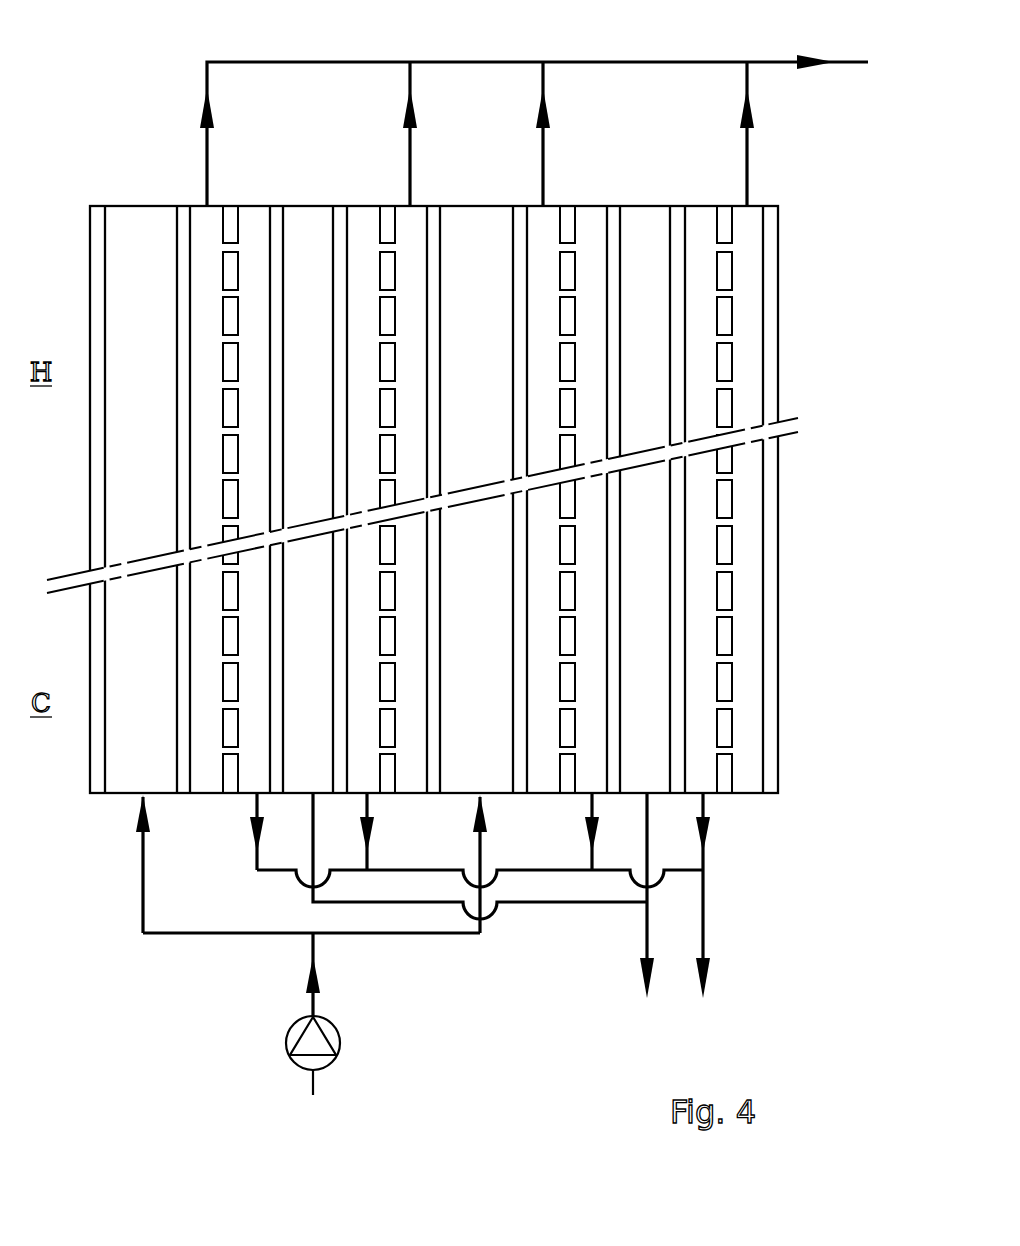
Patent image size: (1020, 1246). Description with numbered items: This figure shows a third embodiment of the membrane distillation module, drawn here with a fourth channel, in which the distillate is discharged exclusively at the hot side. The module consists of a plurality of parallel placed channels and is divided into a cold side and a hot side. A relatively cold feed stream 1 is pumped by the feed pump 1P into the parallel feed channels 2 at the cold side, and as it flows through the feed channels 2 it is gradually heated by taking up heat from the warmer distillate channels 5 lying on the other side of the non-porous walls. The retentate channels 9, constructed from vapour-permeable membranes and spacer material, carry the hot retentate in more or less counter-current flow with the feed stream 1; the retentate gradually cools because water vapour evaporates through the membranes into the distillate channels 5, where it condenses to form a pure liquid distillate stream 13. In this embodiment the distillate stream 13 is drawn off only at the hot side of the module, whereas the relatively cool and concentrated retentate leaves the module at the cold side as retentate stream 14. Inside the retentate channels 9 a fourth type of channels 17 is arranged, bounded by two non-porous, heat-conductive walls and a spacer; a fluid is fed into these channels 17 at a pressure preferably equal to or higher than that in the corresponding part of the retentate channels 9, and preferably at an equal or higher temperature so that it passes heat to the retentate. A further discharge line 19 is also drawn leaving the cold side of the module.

The feed stream 1 is at (318, 1003).
The feed pump 1P is at (296, 1022).
The feed channels 2 is at (135, 717).
The distillate channels 5 is at (200, 259).
The retentate channels 9 is at (249, 717).
The distillate stream 13 is at (205, 152).
The retentate stream 14 is at (708, 943).
The fourth type of channels 17 is at (297, 649).
The outlet 19 is at (645, 943).